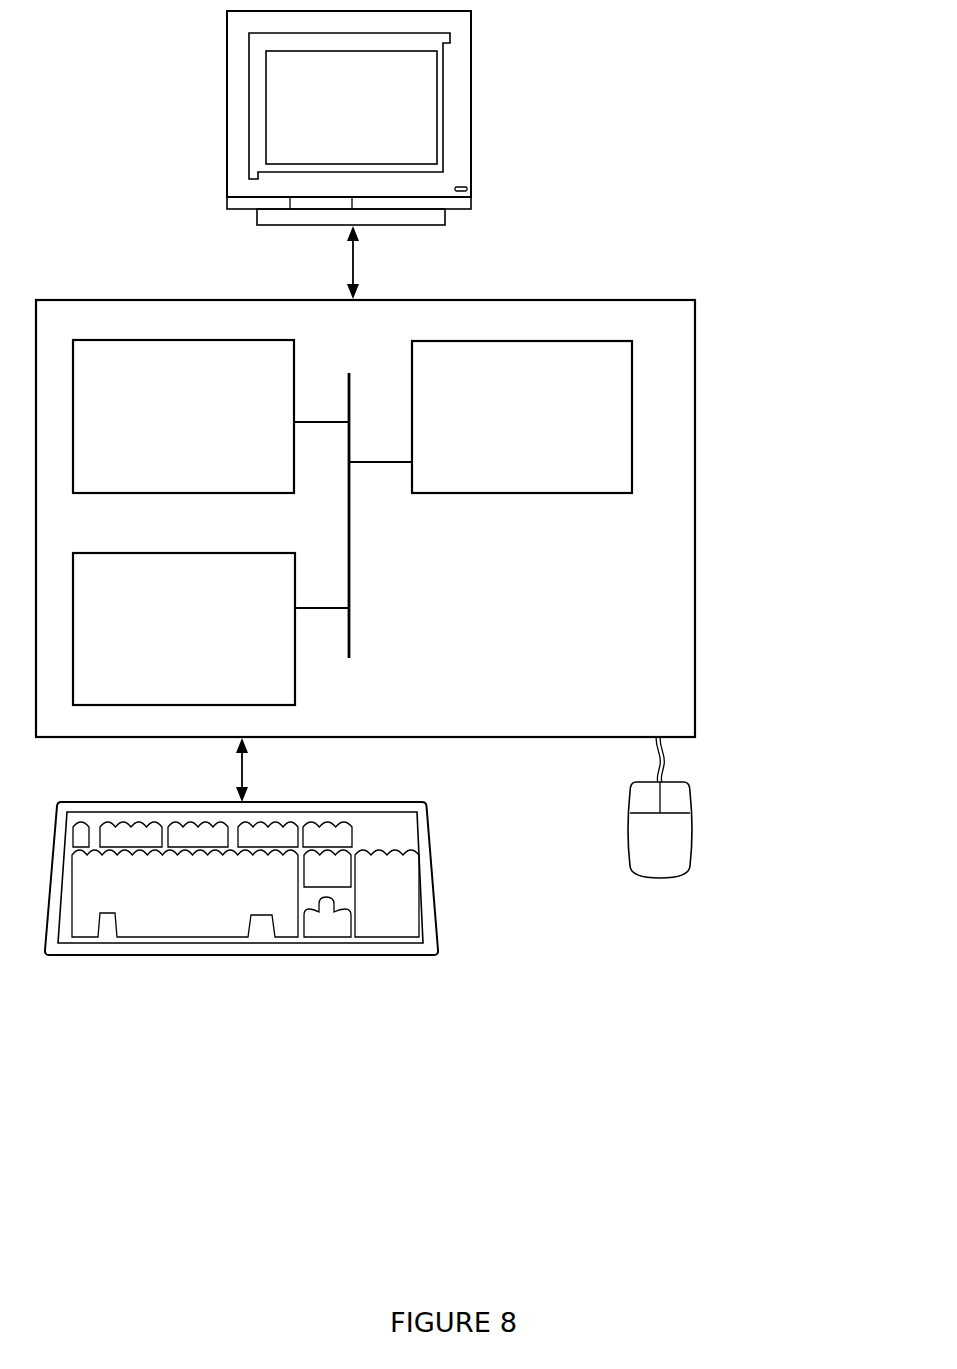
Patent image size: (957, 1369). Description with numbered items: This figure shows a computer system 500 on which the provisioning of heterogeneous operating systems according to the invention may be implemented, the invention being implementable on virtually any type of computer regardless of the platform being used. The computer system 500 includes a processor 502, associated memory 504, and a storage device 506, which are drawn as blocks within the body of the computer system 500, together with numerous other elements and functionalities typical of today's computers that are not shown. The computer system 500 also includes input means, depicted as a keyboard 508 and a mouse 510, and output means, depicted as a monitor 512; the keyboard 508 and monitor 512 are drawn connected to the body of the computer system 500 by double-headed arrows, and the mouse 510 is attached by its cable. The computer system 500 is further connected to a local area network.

The computer system 500 is at (716, 160).
The processor 502 is at (517, 429).
The memory 504 is at (163, 428).
The storage device 506 is at (159, 641).
The keyboard 508 is at (154, 916).
The mouse 510 is at (639, 852).
The monitor 512 is at (332, 122).